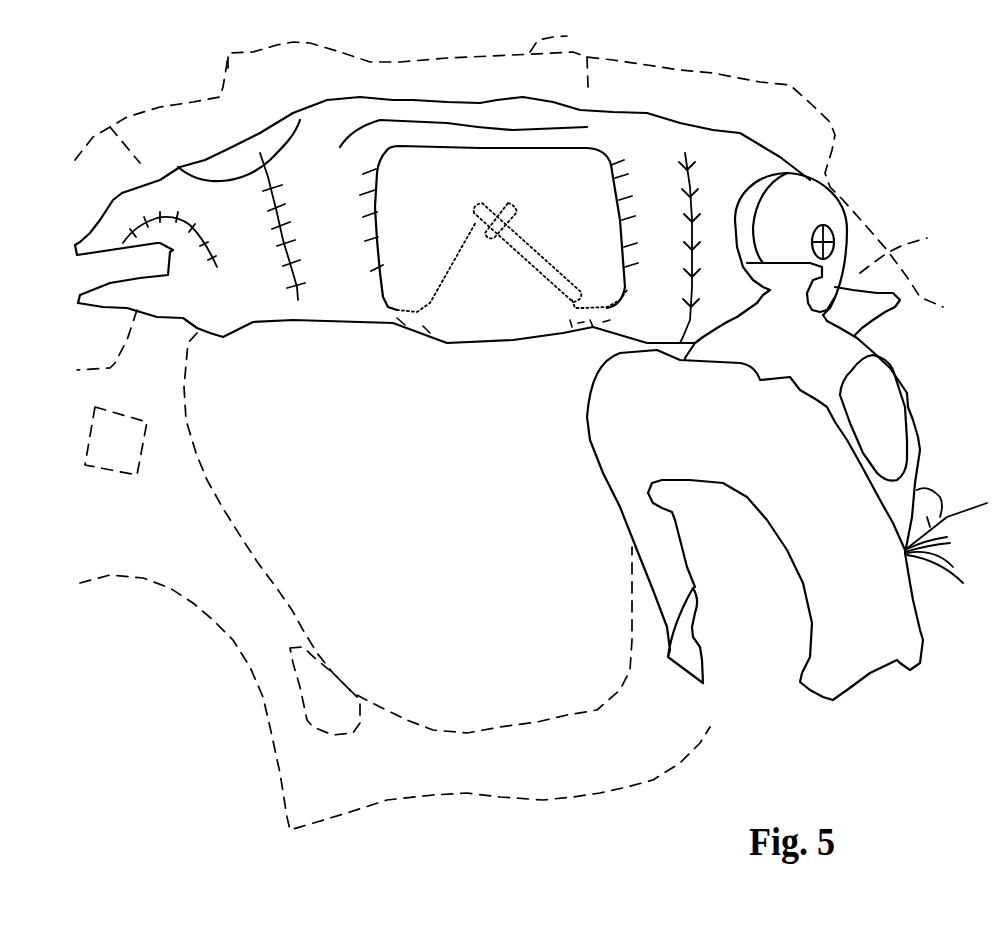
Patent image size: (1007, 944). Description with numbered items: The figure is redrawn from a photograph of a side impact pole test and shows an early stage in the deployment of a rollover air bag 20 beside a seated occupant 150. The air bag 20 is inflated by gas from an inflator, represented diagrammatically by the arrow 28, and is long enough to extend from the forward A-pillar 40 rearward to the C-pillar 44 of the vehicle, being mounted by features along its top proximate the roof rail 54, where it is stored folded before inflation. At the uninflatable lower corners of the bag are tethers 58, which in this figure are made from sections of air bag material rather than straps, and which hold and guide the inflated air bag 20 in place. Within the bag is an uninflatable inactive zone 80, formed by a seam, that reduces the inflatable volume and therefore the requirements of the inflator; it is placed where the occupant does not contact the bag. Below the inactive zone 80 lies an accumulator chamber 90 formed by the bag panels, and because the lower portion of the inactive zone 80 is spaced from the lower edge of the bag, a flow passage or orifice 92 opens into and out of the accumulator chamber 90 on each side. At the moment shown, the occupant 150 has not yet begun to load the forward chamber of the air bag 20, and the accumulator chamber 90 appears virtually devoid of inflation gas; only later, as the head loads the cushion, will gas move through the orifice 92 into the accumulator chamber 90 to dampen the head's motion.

The rollover air bag 20 is at (324, 116).
The inflator arrow 28 is at (102, 238).
The A-pillar 40 is at (912, 249).
The C-pillar 44 is at (151, 108).
The roof rail 54 is at (590, 50).
The tethers 58 is at (860, 306).
The inactive zone 80 is at (410, 183).
The accumulator chamber 90 is at (503, 265).
The orifice 92 is at (415, 315).
The seated occupant 150 is at (833, 220).